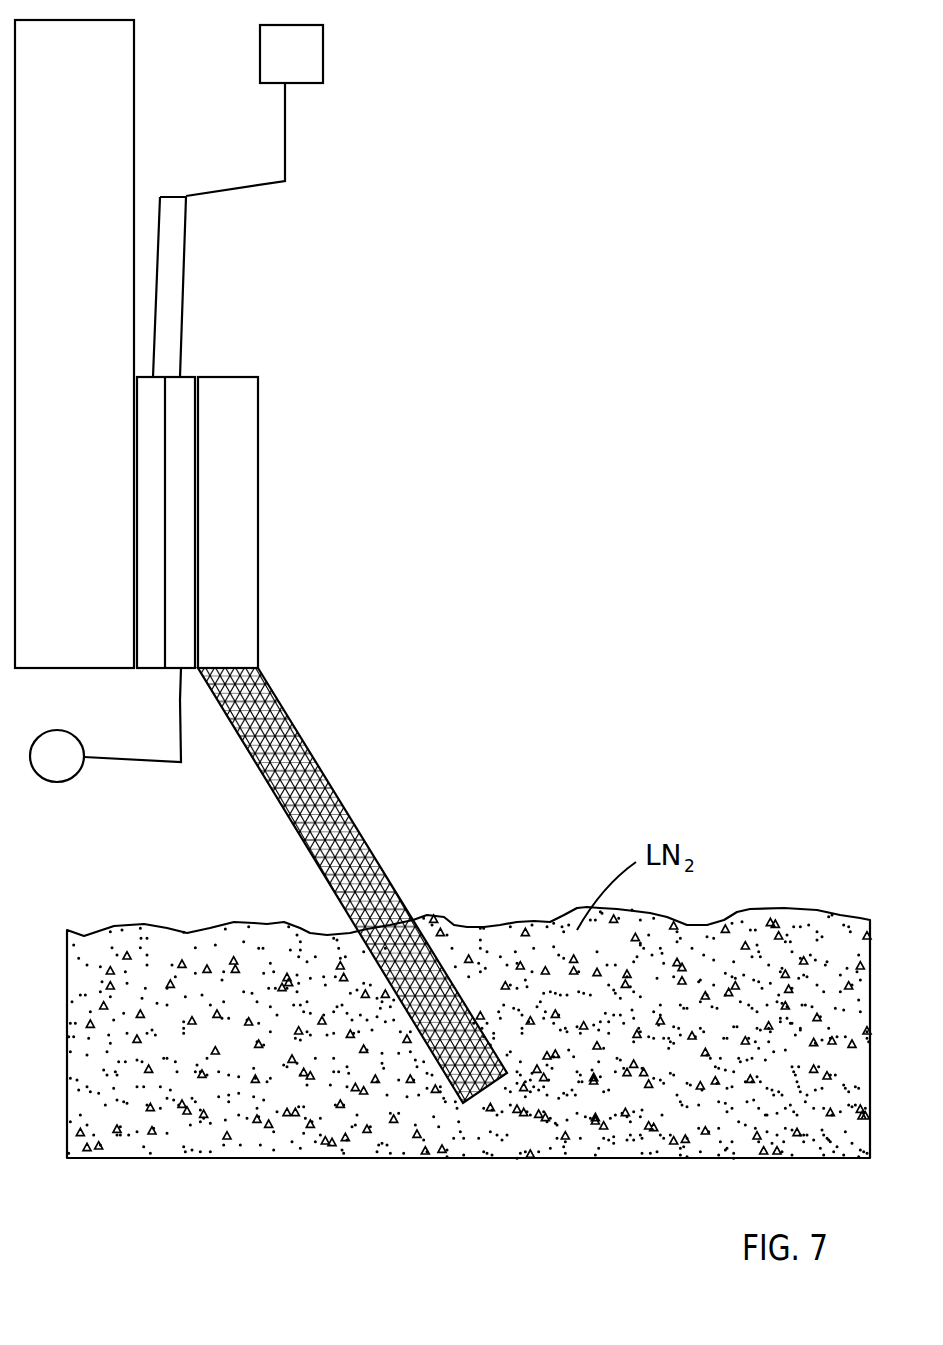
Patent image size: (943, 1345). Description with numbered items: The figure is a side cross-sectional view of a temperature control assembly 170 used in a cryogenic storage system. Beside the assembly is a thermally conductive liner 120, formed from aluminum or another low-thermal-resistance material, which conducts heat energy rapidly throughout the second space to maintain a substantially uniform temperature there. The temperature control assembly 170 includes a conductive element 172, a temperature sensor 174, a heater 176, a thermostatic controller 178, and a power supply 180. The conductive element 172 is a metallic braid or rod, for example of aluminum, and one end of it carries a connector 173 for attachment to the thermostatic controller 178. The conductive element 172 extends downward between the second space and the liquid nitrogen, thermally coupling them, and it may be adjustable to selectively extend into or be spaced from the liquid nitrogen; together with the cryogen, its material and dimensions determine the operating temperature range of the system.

The thermally conductive liner 120 is at (135, 181).
The temperature control assembly 170 is at (556, 138).
The conductive element 172 is at (328, 781).
The connector 173 is at (258, 582).
The temperature sensor 174 is at (43, 770).
The heater 176 is at (147, 668).
The thermostatic controller 178 is at (186, 382).
The power supply 180 is at (276, 66).